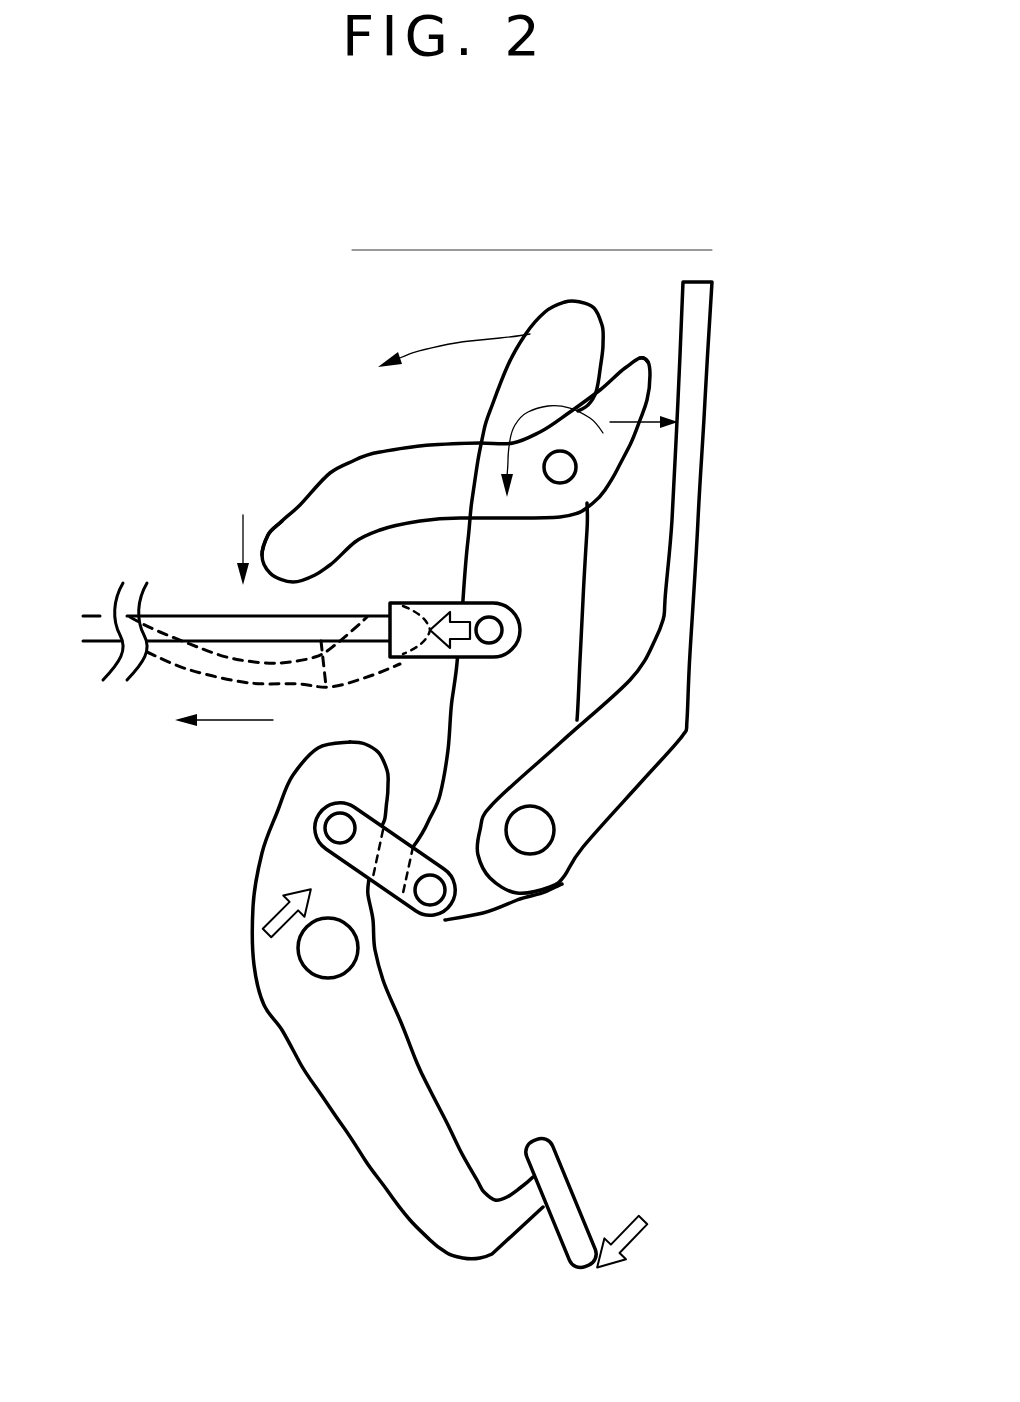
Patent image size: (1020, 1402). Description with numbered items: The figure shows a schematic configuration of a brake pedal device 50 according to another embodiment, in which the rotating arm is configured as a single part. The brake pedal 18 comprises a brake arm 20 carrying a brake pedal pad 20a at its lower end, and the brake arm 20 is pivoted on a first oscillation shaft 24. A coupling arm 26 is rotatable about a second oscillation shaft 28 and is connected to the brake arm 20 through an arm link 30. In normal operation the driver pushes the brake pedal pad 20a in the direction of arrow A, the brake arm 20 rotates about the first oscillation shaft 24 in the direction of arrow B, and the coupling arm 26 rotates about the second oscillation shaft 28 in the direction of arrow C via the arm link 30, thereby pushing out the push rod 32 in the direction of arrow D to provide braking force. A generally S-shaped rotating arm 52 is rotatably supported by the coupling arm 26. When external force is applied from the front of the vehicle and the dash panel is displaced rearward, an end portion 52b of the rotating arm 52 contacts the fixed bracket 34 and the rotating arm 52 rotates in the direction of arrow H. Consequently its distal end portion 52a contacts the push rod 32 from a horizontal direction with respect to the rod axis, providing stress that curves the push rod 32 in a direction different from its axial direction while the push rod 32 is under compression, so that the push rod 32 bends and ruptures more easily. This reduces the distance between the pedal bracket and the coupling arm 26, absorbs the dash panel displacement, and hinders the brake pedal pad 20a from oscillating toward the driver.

The brake pedal 18 is at (411, 1006).
The brake arm 20 is at (358, 1087).
The brake pedal pad 20a is at (550, 1168).
The first oscillation shaft 24 is at (317, 954).
The coupling arm 26 is at (567, 305).
The second oscillation shaft 28 is at (537, 832).
The arm link 30 is at (397, 850).
The push rod 32 is at (225, 630).
The fixed bracket 34 is at (672, 678).
The brake pedal device 50 is at (385, 290).
The rotating arm 52 is at (382, 463).
The distal end portion 52a is at (292, 520).
The end portion 52b is at (650, 312).